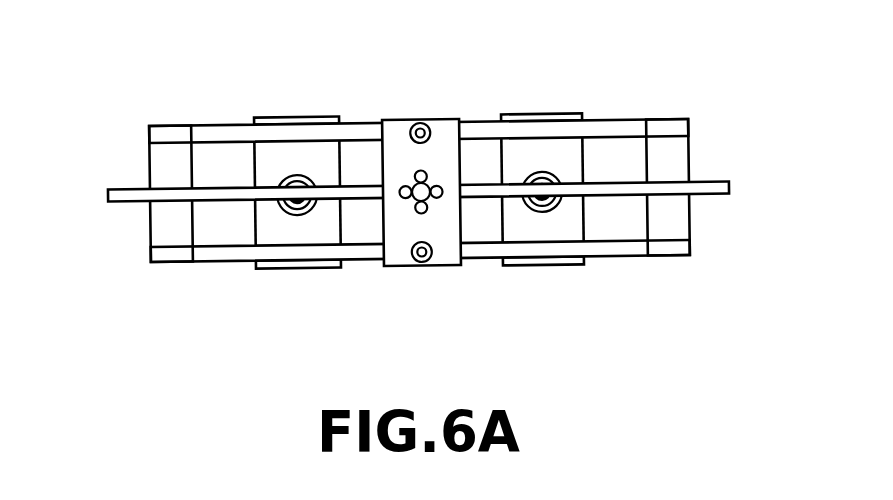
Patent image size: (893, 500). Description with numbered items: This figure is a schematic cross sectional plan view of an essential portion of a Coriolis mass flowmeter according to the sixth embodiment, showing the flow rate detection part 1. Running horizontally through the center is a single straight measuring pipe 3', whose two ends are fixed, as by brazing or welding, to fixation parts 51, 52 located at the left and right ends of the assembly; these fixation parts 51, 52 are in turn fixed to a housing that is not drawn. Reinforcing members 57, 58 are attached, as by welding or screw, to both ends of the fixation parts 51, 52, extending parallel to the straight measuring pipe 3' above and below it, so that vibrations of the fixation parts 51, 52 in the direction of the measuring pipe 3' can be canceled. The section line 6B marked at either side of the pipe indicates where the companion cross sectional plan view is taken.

The flow rate detection part 1 is at (426, 98).
The single straight measuring pipe 3' is at (418, 123).
The fixation part 51 is at (167, 222).
The fixation part 52 is at (680, 216).
The reinforcing member 57 is at (562, 130).
The reinforcing member 58 is at (533, 248).
The section line 6B— 6B is at (97, 195).